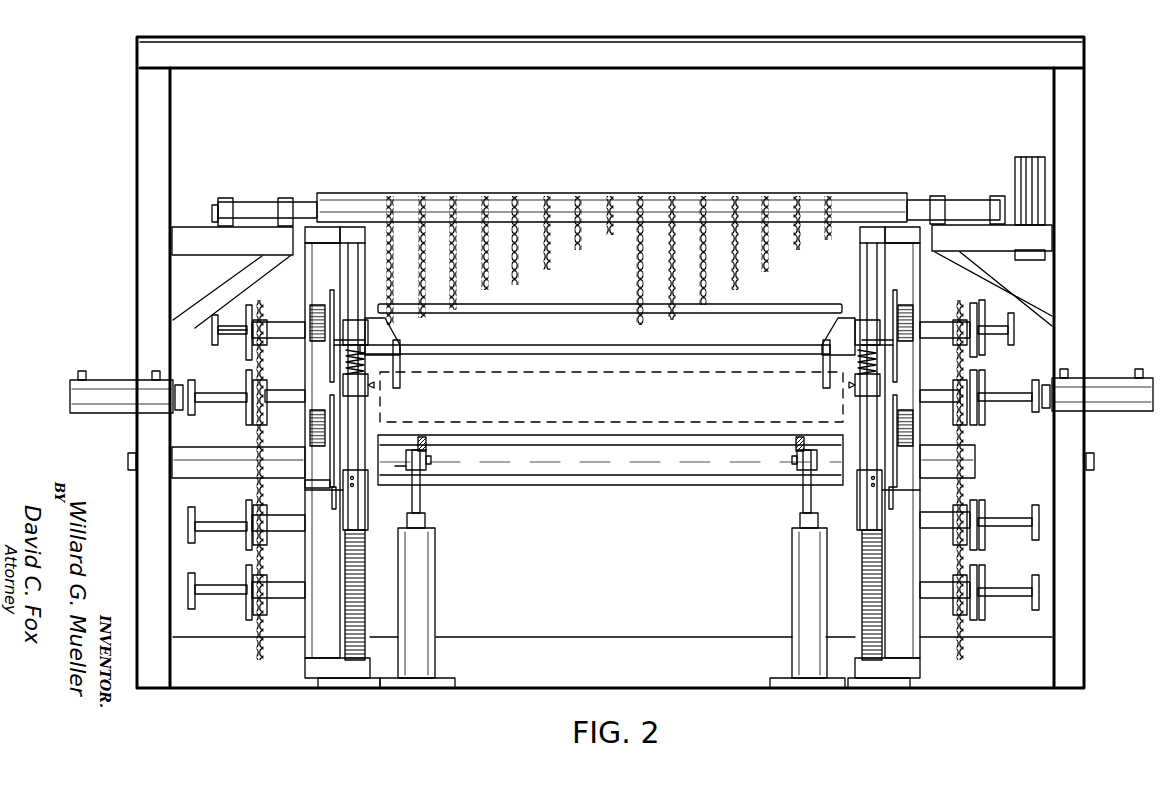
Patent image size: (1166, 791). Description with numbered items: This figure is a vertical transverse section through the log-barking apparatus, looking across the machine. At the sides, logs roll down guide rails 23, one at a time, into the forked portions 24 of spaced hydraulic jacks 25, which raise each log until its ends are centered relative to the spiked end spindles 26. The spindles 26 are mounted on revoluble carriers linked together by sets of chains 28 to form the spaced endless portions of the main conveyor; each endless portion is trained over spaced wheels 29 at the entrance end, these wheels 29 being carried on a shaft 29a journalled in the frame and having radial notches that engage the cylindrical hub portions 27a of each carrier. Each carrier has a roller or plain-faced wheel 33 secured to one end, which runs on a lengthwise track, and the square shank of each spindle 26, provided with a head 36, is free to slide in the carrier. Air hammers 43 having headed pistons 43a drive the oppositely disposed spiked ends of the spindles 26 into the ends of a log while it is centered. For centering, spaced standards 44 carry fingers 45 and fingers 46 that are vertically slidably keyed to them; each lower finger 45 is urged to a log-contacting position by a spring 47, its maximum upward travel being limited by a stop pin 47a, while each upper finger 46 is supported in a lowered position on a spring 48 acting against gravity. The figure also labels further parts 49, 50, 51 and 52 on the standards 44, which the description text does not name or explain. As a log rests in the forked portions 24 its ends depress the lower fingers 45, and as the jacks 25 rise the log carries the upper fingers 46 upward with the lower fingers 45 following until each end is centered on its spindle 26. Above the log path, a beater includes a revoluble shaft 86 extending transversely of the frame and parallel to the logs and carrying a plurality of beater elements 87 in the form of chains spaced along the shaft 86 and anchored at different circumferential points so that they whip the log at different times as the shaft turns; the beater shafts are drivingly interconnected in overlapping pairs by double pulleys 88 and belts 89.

The guide rails 23 is at (428, 451).
The forked portions 24 is at (422, 498).
The hydraulic jacks 25 is at (422, 573).
The spiked end spindles 26 is at (233, 393).
The cylindrical hub portions 27a is at (291, 328).
The sets of chains 28 is at (258, 430).
The wheels 29 is at (254, 490).
The shaft 29a is at (128, 462).
The roller or plain-faced wheel 33 is at (980, 410).
The head 36 is at (210, 320).
The air hammers 43 is at (70, 397).
The headed pistons 43a is at (179, 384).
The standards 44 is at (356, 275).
The fingers 45 is at (388, 505).
The fingers 46 is at (402, 381).
The spring 47 is at (343, 631).
The stop pin 47a is at (397, 440).
The spring 48 is at (358, 393).
The guide plate 49 is at (332, 492).
The guide bar 50 is at (332, 450).
The cross pin 51 is at (324, 346).
The gear 52 is at (330, 292).
The revoluble shaft 86 is at (660, 198).
The beater elements 87 is at (622, 280).
The double pulleys 88 is at (1014, 170).
The belts 89 is at (1030, 157).